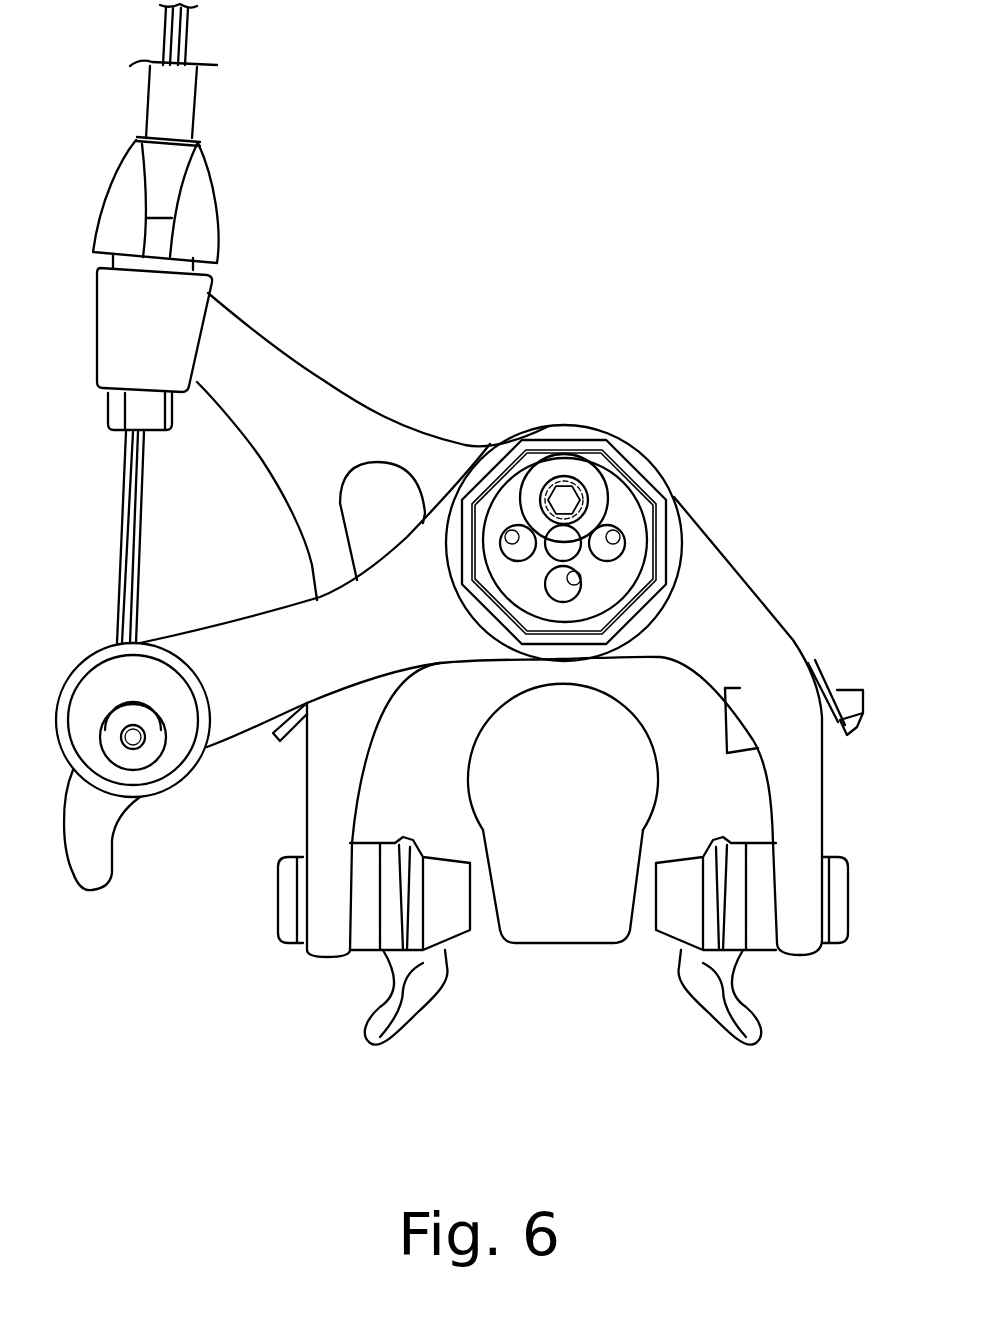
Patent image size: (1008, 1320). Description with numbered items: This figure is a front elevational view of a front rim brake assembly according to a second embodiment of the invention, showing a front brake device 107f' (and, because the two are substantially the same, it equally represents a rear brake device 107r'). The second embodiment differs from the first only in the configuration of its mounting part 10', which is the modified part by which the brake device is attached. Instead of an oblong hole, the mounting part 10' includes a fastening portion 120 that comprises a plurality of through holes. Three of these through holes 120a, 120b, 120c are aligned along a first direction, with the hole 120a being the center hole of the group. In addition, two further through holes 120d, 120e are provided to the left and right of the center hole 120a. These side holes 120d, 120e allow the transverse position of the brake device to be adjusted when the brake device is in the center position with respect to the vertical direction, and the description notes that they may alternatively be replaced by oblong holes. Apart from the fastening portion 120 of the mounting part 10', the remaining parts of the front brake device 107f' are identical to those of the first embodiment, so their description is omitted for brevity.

The mounting part 10' is at (357, 473).
The front brake device 107f' is at (535, 659).
The rear brake device 107r' is at (563, 941).
The fastening portion 120 is at (535, 565).
The through hole (center hole) 120a is at (620, 528).
The through hole 120b is at (577, 489).
The through hole 120c is at (580, 587).
The through hole 120d is at (576, 531).
The through hole 120e is at (503, 530).